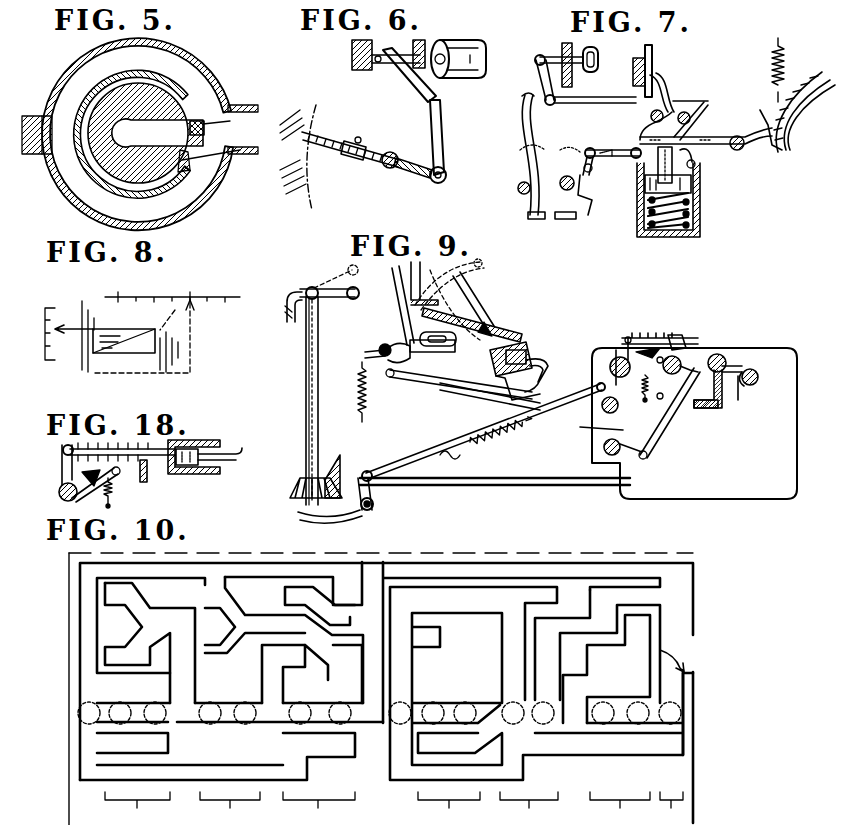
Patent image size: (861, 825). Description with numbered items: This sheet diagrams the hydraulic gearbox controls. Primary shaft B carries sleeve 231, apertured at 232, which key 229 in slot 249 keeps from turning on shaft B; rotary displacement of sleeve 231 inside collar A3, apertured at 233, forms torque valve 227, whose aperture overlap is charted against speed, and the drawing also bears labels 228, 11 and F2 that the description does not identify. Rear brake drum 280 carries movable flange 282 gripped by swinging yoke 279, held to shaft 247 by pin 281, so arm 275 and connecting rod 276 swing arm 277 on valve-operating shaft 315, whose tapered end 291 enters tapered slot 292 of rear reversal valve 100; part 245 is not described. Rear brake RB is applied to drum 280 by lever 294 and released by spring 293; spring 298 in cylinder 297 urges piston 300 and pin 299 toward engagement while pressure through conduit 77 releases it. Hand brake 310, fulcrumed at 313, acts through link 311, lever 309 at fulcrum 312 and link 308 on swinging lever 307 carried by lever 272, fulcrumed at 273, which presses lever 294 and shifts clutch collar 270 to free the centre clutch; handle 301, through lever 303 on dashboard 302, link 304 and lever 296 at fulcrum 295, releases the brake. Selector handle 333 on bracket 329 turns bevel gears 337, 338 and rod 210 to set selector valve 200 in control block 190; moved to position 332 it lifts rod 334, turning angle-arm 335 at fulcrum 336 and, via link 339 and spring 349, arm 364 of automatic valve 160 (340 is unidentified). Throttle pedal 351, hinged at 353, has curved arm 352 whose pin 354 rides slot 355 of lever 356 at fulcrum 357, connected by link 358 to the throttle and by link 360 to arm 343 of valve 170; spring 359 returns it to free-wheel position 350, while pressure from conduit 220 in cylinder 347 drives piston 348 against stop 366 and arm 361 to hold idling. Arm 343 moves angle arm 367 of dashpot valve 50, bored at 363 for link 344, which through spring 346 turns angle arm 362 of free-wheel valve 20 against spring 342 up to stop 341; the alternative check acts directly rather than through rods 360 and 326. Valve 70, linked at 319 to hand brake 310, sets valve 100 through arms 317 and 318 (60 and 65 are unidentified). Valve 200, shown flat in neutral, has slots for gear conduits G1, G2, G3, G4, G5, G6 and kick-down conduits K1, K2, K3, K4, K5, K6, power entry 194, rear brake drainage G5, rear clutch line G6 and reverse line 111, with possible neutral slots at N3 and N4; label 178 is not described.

In FIG. 5, the casing 11 is at (252, 106).
In FIG. 18, the free-wheel valve 20 is at (59, 493).
In FIG. 9, the free-wheel valve 20 is at (610, 367).
In FIG. 9, the dashpot control valve 50 is at (685, 365).
In FIG. 9, the spring 60 is at (636, 388).
In FIG. 9, the bracket 65 is at (708, 389).
In FIG. 9, the handbrake-operated valve 70 is at (722, 355).
In FIG. 7, the conduit 77 is at (696, 164).
In FIG. 6, the rear reversal valve 100 is at (478, 52).
In FIG. 9, the rear reversal valve 100 is at (752, 368).
In FIG. 10, the reverse line 111 is at (668, 728).
In FIG. 9, the automatic valve 160 is at (592, 430).
In FIG. 9, the trigger valve 170 is at (600, 460).
In FIG. 10, the shift gate plate 178 is at (88, 728).
In FIG. 9, the control block 190 is at (722, 452).
In FIG. 10, the power passage 194 is at (410, 704).
In FIG. 10, the selector valve 200 is at (394, 811).
In FIG. 9, the connecting rod 210 is at (496, 486).
In FIG. 18, the conduit 220 is at (242, 450).
In FIG. 9, the conduit 220 is at (552, 352).
In FIG. 5, the torque valve 227 is at (182, 95).
In FIG. 8, the torque valve 227 is at (135, 352).
In FIG. 5, the hub 228 is at (145, 133).
In FIG. 5, the key 229 is at (133, 84).
In FIG. 5, the sleeve 231 is at (205, 133).
In FIG. 8, the sleeve 231 is at (95, 352).
In FIG. 5, the sleeve aperture 232 is at (232, 121).
In FIG. 8, the sleeve aperture 232 is at (170, 373).
In FIG. 5, the collar aperture 233 is at (224, 156).
In FIG. 8, the collar aperture 233 is at (142, 329).
In FIG. 6, the bracket 245 is at (352, 58).
In FIG. 6, the shaft 247 is at (383, 166).
In FIG. 5, the slot 249 is at (108, 85).
In FIG. 7, the clutch collar 270 is at (653, 60).
In FIG. 7, the lever 272 is at (666, 80).
In FIG. 7, the fulcrum 273 is at (651, 116).
In FIG. 6, the arm 275 is at (408, 172).
In FIG. 6, the connecting rod 276 is at (442, 128).
In FIG. 6, the arm 277 is at (406, 82).
In FIG. 6, the swinging yoke 279 is at (330, 136).
In FIG. 7, the rear brake drum 280 is at (788, 154).
In FIG. 6, the pin 281 is at (360, 141).
In FIG. 6, the movable annular flange 282 is at (312, 198).
In FIG. 6, the tapered shaft end 291 is at (445, 72).
In FIG. 6, the tapered slot 292 is at (424, 44).
In FIG. 7, the spring 293 is at (772, 66).
In FIG. 7, the brake lever 294 is at (700, 138).
In FIG. 7, the fulcrum 295 is at (690, 98).
In FIG. 7, the lever 296 is at (690, 112).
In FIG. 7, the cylinder 297 is at (692, 190).
In FIG. 7, the spring 298 is at (680, 238).
In FIG. 7, the pin 299 is at (656, 170).
In FIG. 7, the piston 300 is at (648, 200).
In FIG. 7, the rear brake release lever 301 is at (597, 55).
In FIG. 7, the dashboard 302 is at (574, 78).
In FIG. 7, the lever 303 is at (536, 72).
In FIG. 7, the link 304 is at (596, 104).
In FIG. 7, the swinging lever 307 is at (590, 149).
In FIG. 7, the link 308 is at (584, 162).
In FIG. 7, the lever 309 is at (586, 216).
In FIG. 7, the hand brake 310 is at (530, 125).
In FIG. 7, the link 311 is at (552, 219).
In FIG. 7, the fulcrum 312 is at (562, 181).
In FIG. 7, the fulcrum 313 is at (518, 190).
In FIG. 6, the valve-operating shaft 315 is at (378, 62).
In FIG. 9, the arm 317 is at (738, 400).
In FIG. 9, the arm 318 is at (746, 384).
In FIG. 9, the link 319 is at (700, 408).
In FIG. 9, the rod 326 is at (664, 448).
In FIG. 9, the bracket 329 is at (287, 300).
In FIG. 9, the automatic-drive position 332 is at (335, 282).
In FIG. 9, the gear selector handle 333 is at (335, 298).
In FIG. 9, the rod 334 is at (310, 388).
In FIG. 9, the angle-arm 335 is at (374, 504).
In FIG. 9, the fulcrum 336 is at (350, 518).
In FIG. 9, the bevel gear 337 is at (302, 480).
In FIG. 9, the bevel gear 338 is at (338, 465).
In FIG. 9, the link 339 is at (460, 442).
In FIG. 9, the shaft 340 is at (318, 454).
In FIG. 18, the stop 341 is at (95, 495).
In FIG. 9, the stop 341 is at (660, 345).
In FIG. 18, the spring 342 is at (112, 490).
In FIG. 9, the spring 342 is at (666, 389).
In FIG. 9, the arm 343 is at (626, 456).
In FIG. 18, the link 344 is at (110, 448).
In FIG. 9, the link 344 is at (685, 340).
In FIG. 18, the spring 346 is at (62, 446).
In FIG. 9, the spring 346 is at (640, 340).
In FIG. 18, the cylinder 347 is at (220, 458).
In FIG. 9, the cylinder 347 is at (518, 358).
In FIG. 18, the piston 348 is at (196, 470).
In FIG. 9, the piston 348 is at (528, 350).
In FIG. 9, the spring 349 is at (496, 448).
In FIG. 9, the free-wheel position 350 is at (480, 262).
In FIG. 9, the throttle pedal 351 is at (460, 290).
In FIG. 9, the curved arm 352 is at (470, 302).
In FIG. 9, the hinge 353 is at (484, 326).
In FIG. 9, the pin 354 is at (428, 352).
In FIG. 9, the slot 355 is at (448, 346).
In FIG. 9, the lever 356 is at (370, 350).
In FIG. 9, the fulcrum 357 is at (386, 344).
In FIG. 9, the link 358 is at (396, 282).
In FIG. 9, the spring 359 is at (368, 394).
In FIG. 9, the link 360 is at (486, 400).
In FIG. 9, the arm 361 is at (452, 388).
In FIG. 18, the angle arm 362 is at (62, 469).
In FIG. 9, the angle arm 362 is at (616, 350).
In FIG. 18, the bore 363 is at (148, 478).
In FIG. 9, the bore 363 is at (678, 335).
In FIG. 9, the arm 364 is at (616, 392).
In FIG. 9, the stop 366 is at (505, 358).
In FIG. 9, the angle arm 367 is at (690, 355).
In FIG. 5, the collar A3 is at (193, 161).
In FIG. 8, the collar A3 is at (82, 345).
In FIG. 5, the primary drive shaft B is at (176, 148).
In FIG. 5, the force arrow F2 is at (208, 96).
In FIG. 7, the rear brake RB is at (795, 95).
In FIG. 10, the gear conduit G1 is at (128, 726).
In FIG. 10, the kick-down conduit K1 is at (160, 726).
In FIG. 10, the gear conduit G2 is at (208, 704).
In FIG. 10, the kick-down conduit K2 is at (244, 704).
In FIG. 10, the gear conduit G3 is at (306, 728).
In FIG. 10, the kick-down conduit K3 is at (342, 728).
In FIG. 10, the gear conduit G4 is at (440, 704).
In FIG. 10, the kick-down conduit K4 is at (478, 700).
In FIG. 10, the rear brake conduit G5 is at (516, 728).
In FIG. 10, the kick-down conduit K5 is at (548, 728).
In FIG. 10, the rear clutch line G6 is at (604, 728).
In FIG. 10, the kick-down conduit K6 is at (638, 728).
In FIG. 10, the neutral power slot location N3 is at (490, 704).
In FIG. 10, the neutral drainage slot location N4 is at (580, 706).